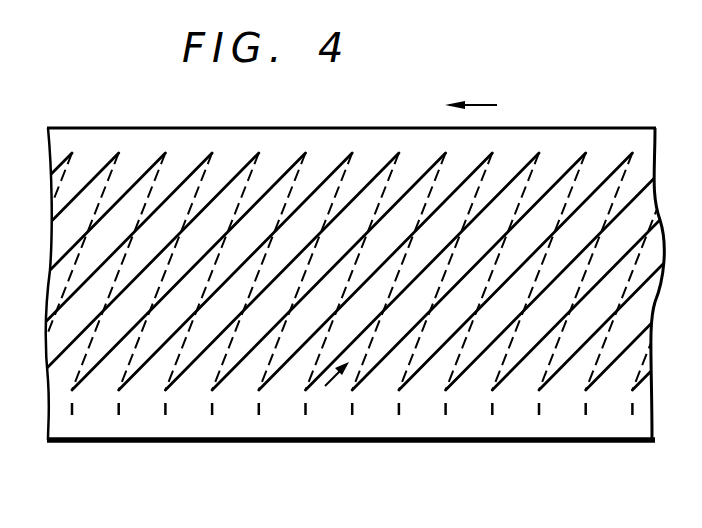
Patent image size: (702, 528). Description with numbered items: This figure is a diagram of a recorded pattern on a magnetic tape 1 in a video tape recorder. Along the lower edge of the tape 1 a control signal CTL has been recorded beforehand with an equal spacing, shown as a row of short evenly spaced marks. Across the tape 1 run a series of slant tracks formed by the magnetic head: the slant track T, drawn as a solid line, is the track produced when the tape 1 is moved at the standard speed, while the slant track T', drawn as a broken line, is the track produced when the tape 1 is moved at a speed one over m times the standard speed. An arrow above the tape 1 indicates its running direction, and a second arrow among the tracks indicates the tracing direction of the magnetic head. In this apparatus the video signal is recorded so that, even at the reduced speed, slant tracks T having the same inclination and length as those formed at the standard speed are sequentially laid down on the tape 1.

The magnetic tape 1 is at (595, 136).
The control signal CTL is at (118, 403).
The slant track T is at (351, 324).
The slant track T' is at (351, 324).